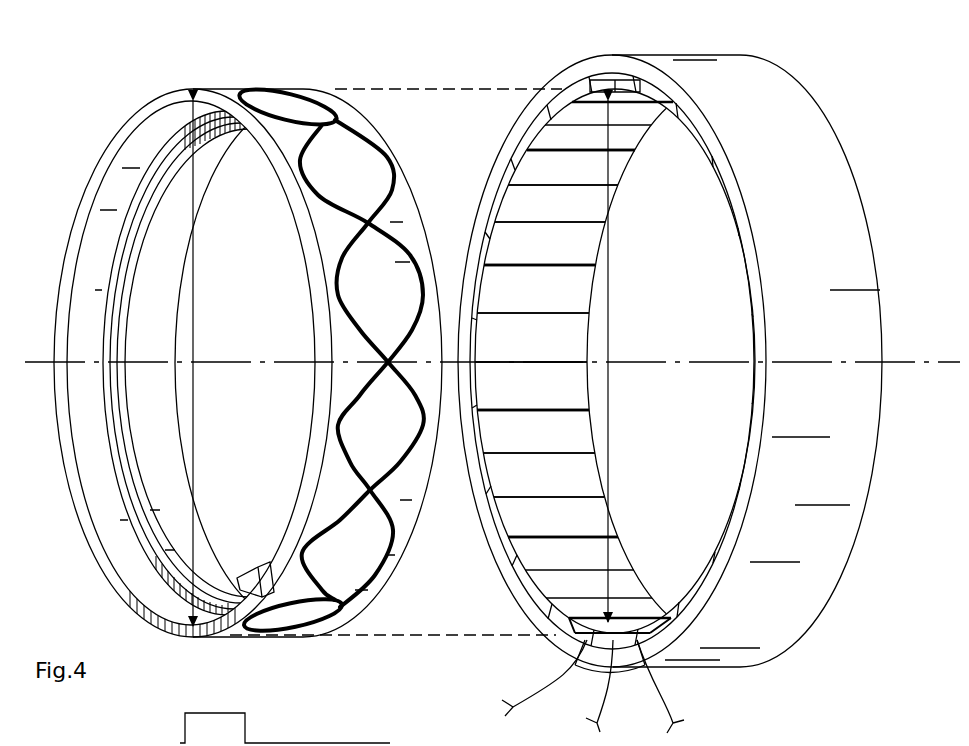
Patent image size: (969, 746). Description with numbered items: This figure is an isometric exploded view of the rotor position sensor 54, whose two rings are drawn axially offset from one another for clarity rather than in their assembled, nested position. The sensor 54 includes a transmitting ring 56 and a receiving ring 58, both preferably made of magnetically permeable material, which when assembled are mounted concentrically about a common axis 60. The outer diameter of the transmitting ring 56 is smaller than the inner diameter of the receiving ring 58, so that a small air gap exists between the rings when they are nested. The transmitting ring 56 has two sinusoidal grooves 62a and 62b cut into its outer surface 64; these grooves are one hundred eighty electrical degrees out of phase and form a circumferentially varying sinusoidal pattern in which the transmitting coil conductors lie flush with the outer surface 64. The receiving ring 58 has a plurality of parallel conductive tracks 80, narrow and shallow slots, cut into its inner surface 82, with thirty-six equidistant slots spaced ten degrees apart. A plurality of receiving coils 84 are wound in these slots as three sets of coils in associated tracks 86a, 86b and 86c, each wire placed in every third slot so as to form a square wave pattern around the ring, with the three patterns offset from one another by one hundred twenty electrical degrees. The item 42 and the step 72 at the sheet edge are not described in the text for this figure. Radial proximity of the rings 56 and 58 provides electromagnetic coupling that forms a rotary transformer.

The outer housing ring 42 is at (657, 383).
The rotor position sensor 54 is at (443, 64).
The transmitting ring 56 is at (93, 173).
The receiving ring 58 is at (578, 62).
The common axis 60 is at (263, 350).
The sinusoidal groove 62a is at (381, 152).
The sinusoidal groove 62b is at (336, 214).
The outer surface 64 is at (344, 359).
The step 72 is at (333, 742).
The parallel conductive tracks 80 is at (512, 412).
The inner surface 82 is at (525, 518).
The receiving coils 84 is at (597, 413).
The track 86a is at (588, 150).
The track 86b is at (590, 222).
The track 86c is at (595, 185).